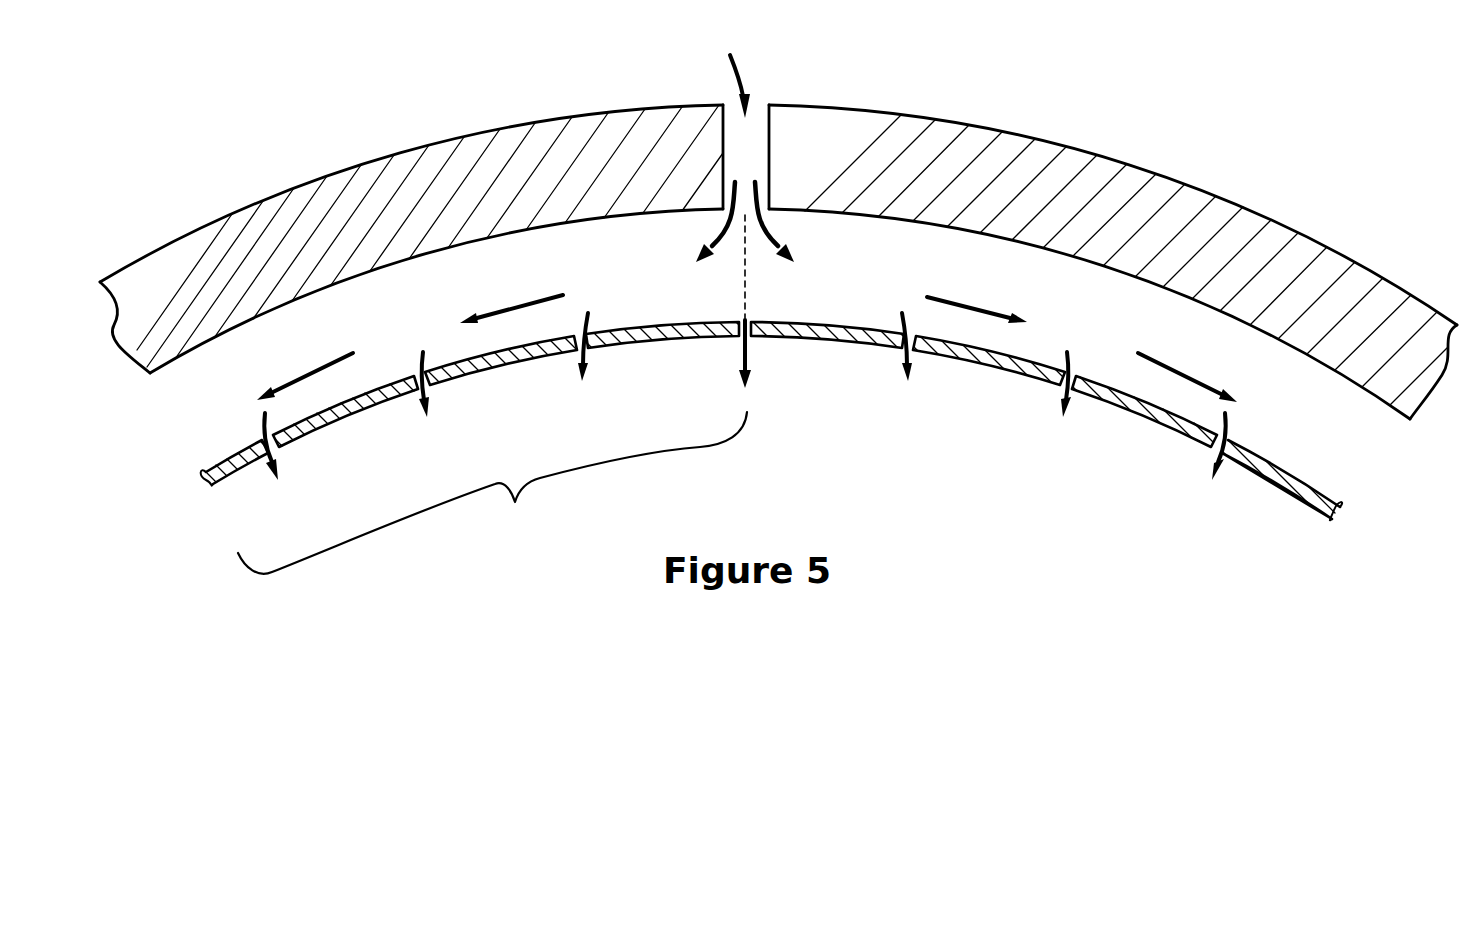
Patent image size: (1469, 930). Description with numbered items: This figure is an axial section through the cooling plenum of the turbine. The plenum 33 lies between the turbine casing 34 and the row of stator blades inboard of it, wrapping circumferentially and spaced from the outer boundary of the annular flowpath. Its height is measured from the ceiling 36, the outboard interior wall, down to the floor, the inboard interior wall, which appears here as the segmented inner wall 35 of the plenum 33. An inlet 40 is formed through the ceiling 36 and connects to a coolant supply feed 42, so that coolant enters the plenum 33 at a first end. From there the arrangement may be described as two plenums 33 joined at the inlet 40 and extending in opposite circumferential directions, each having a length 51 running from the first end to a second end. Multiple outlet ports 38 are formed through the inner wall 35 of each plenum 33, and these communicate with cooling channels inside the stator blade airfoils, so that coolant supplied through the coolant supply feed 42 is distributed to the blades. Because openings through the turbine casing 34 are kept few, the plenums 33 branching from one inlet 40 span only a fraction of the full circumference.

The turbine casing 34 is at (422, 211).
The coolant supply feed 42 is at (732, 158).
The plenum 33 is at (350, 316).
The ceiling 36 is at (476, 248).
The perforated liner segments 35 is at (544, 335).
The outlet ports 38 is at (418, 392).
The inlet 40 is at (713, 233).
The length 51 is at (492, 493).